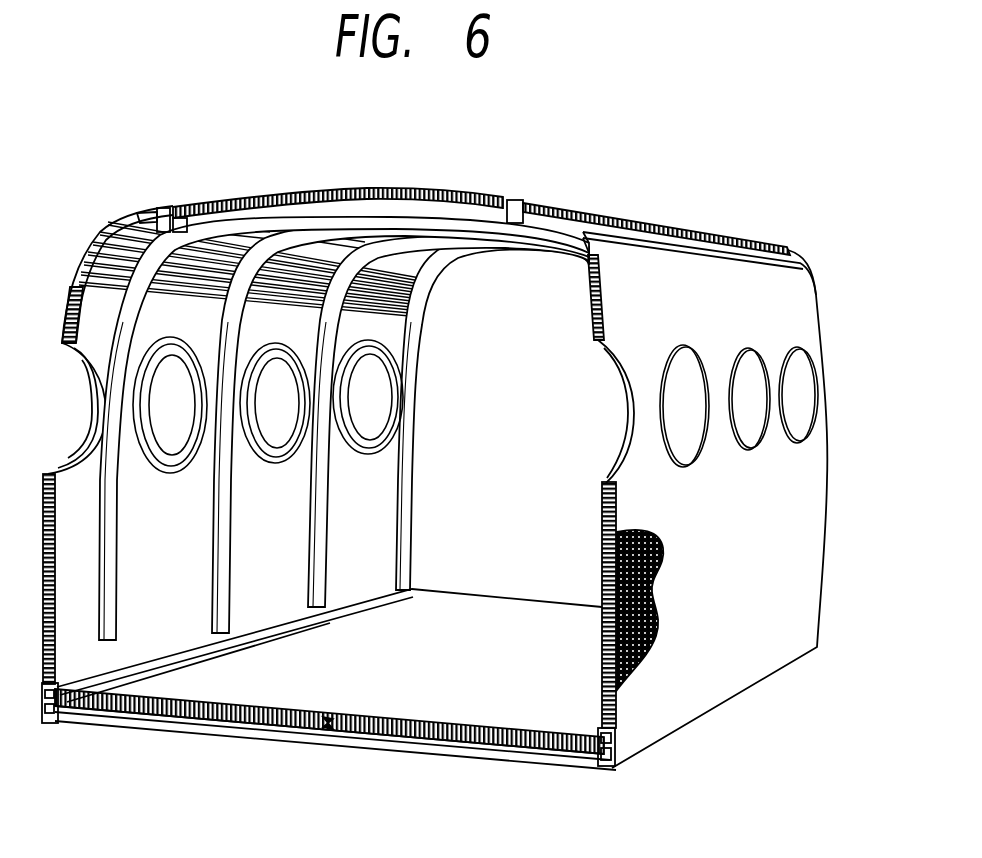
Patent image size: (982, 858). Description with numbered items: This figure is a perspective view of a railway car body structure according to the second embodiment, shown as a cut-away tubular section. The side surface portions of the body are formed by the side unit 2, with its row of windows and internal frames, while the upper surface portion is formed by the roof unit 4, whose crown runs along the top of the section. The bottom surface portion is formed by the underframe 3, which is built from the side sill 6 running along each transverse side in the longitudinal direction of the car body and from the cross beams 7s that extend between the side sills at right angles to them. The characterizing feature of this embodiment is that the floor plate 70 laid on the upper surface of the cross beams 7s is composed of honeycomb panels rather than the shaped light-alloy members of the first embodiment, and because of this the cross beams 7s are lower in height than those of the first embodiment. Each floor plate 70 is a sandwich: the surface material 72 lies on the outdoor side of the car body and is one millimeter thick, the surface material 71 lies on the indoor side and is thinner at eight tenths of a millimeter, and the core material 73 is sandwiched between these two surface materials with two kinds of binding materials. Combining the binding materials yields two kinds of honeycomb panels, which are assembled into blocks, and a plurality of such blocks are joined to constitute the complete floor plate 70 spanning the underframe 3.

The side unit 2 is at (805, 485).
The underframe 3 is at (170, 722).
The roof unit 4 is at (382, 190).
The side sill 6 is at (613, 762).
The floor plate 70 is at (390, 731).
The surface material 71 is at (482, 740).
The surface material 72 is at (284, 728).
The core material 73 is at (328, 730).
The cross beam 7s is at (548, 752).